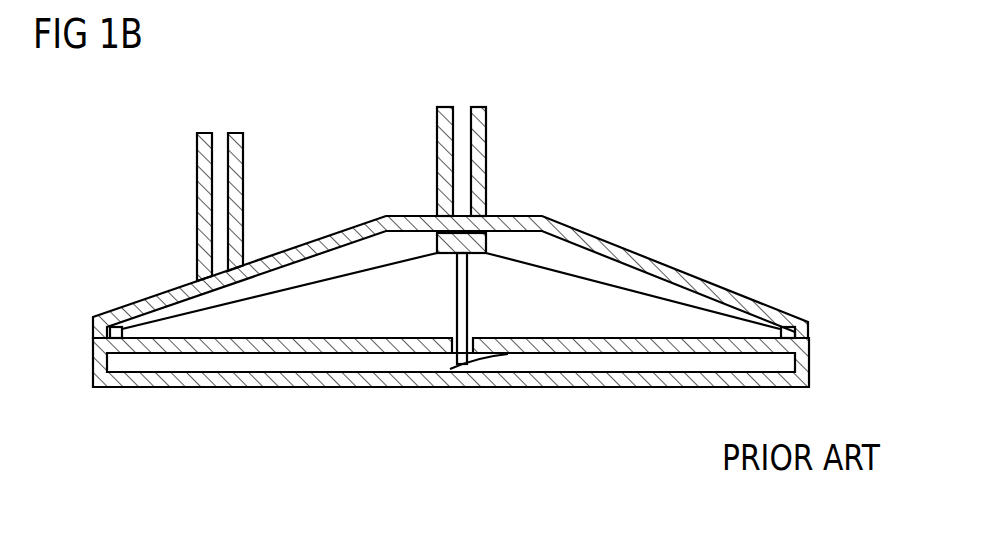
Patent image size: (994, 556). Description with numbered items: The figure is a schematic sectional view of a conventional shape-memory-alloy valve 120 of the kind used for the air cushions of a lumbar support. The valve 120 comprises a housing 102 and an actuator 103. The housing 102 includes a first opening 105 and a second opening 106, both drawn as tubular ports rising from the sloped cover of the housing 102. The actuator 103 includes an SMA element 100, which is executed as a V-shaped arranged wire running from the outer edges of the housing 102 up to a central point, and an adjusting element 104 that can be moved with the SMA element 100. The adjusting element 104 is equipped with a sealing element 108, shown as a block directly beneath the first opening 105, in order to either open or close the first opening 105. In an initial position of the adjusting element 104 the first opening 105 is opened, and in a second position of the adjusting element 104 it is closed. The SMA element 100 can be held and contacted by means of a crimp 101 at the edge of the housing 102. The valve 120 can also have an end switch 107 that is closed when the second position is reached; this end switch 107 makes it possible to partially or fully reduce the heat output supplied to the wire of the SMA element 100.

The SMA element 100 is at (227, 307).
The crimp 101 is at (787, 326).
The housing 102 is at (693, 250).
The actuator 103 is at (453, 295).
The adjusting element 104 is at (467, 302).
The first opening 105 is at (463, 107).
The second opening 106 is at (222, 133).
The end switch 107 is at (488, 360).
The sealing element 108 is at (487, 243).
The valve 120 is at (615, 165).